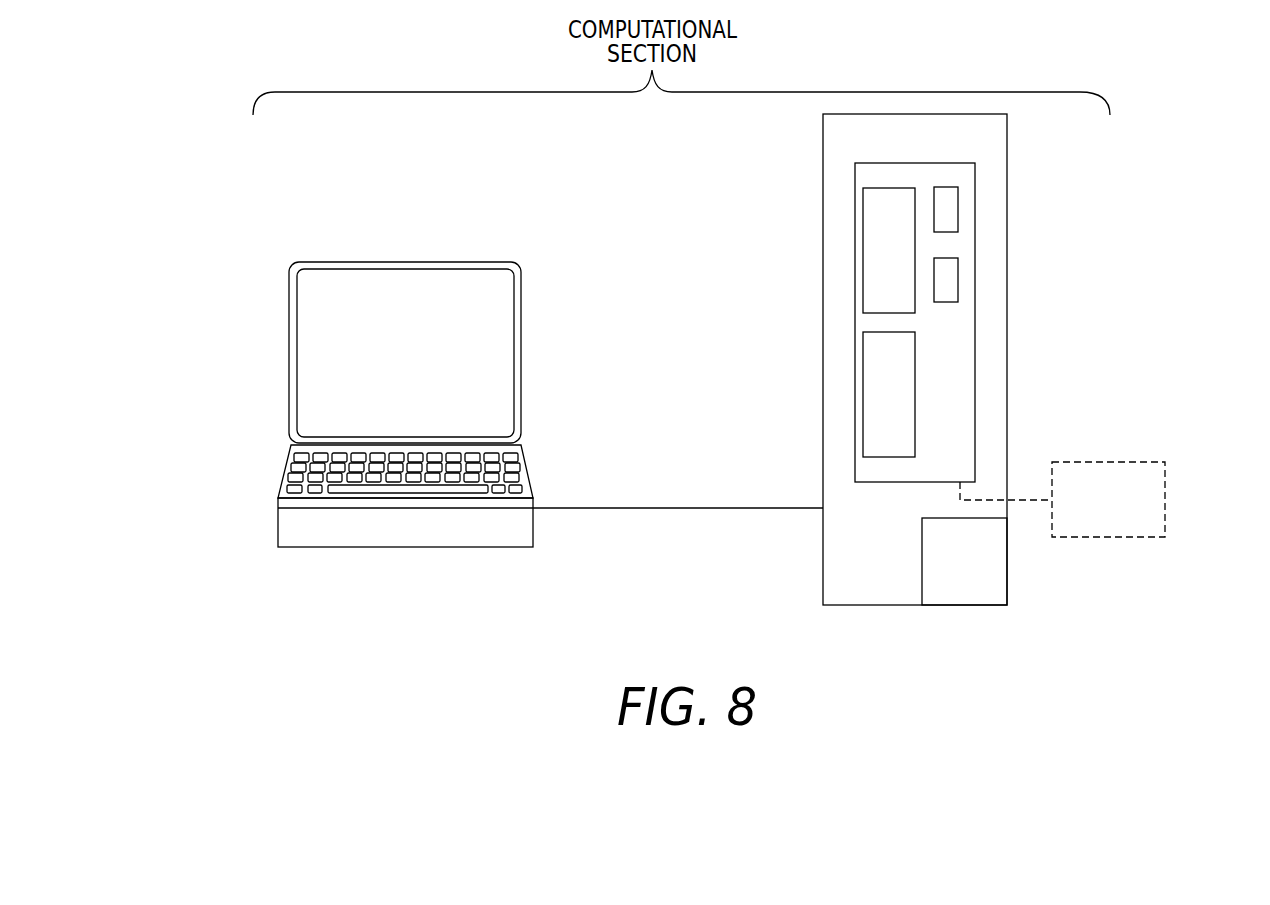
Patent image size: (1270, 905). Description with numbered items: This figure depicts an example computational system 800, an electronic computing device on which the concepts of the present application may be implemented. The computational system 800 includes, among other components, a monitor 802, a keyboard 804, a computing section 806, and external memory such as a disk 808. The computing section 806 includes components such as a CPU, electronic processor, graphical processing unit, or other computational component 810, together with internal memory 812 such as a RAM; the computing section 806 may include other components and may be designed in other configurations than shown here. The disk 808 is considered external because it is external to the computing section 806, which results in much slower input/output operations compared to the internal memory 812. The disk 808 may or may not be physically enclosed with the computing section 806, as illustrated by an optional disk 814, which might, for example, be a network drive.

The computational system 800 is at (570, 214).
The monitor 802 is at (362, 265).
The keyboard 804 is at (382, 544).
The computing section 806 is at (995, 272).
The disk 808 is at (978, 597).
The computational component 810 is at (870, 273).
The internal memory 812 is at (870, 404).
The optional disk 814 is at (1115, 462).